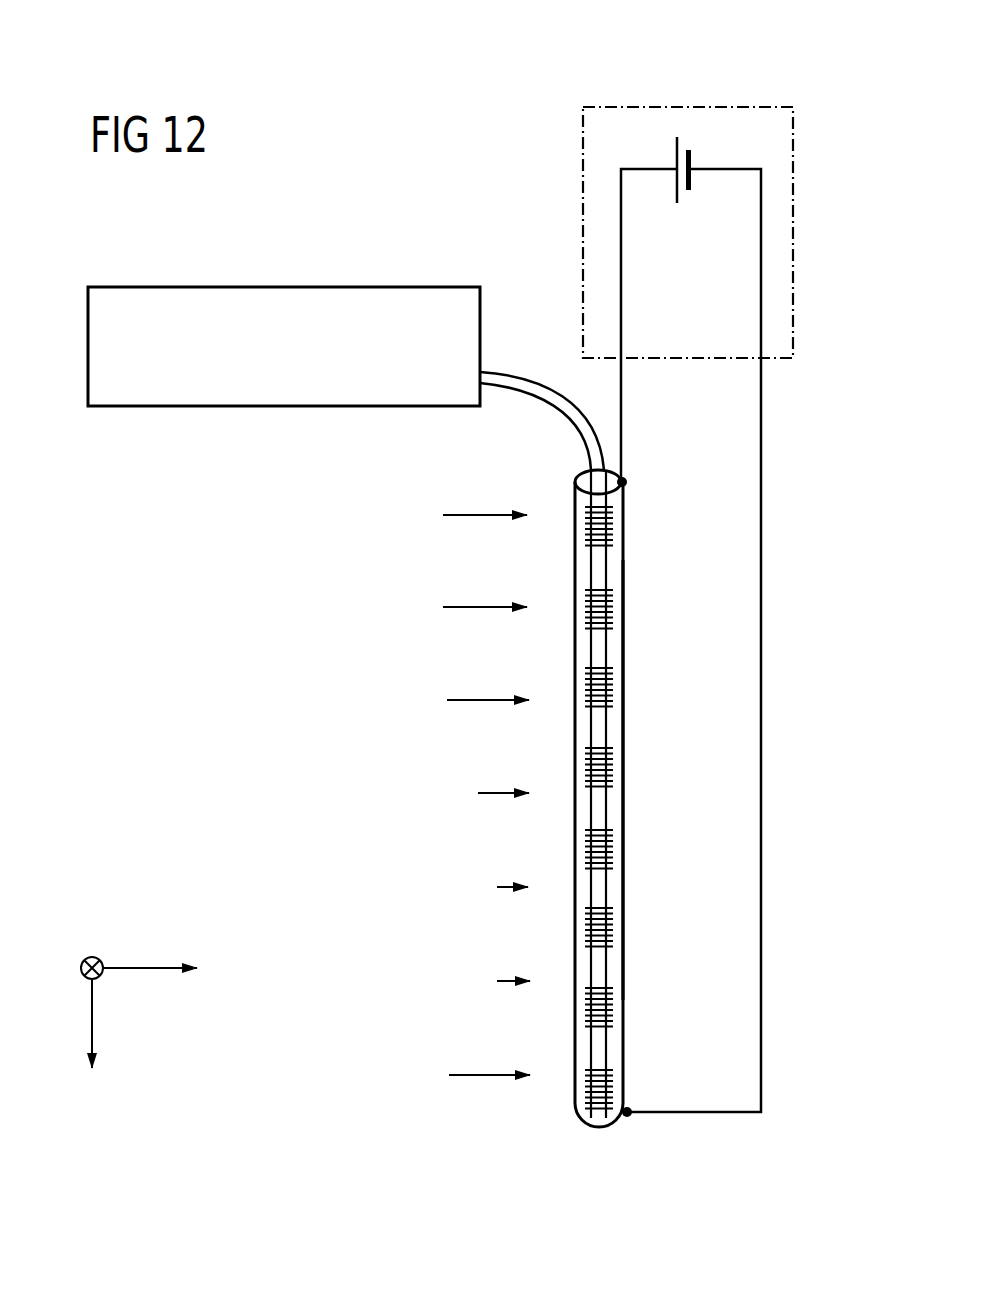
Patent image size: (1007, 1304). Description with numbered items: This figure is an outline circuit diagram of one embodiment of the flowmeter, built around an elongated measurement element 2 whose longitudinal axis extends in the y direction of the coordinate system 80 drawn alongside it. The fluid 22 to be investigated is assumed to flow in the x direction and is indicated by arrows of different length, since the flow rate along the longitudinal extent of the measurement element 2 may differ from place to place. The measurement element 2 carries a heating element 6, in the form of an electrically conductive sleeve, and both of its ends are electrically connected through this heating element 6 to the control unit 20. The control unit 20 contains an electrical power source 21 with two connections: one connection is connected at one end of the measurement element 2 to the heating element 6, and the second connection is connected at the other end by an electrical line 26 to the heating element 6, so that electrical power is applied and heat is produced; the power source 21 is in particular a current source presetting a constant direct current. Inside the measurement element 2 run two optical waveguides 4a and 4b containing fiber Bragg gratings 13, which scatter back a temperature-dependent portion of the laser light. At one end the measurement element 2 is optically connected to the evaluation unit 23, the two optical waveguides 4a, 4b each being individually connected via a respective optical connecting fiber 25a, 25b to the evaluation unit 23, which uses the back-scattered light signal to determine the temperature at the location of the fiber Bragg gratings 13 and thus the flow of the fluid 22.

The measurement element 2 is at (634, 526).
The optical waveguide 4a is at (592, 1047).
The optical waveguide 4b is at (607, 802).
The heating element 6 is at (625, 713).
The fiber Bragg grating 13 is at (615, 925).
The control unit 20 is at (795, 226).
The electrical power source 21 is at (684, 133).
The fluid 22 is at (496, 890).
The evaluation unit 23 is at (287, 406).
The optical connecting fiber 25a is at (577, 420).
The optical connecting fiber 25b is at (571, 392).
The connecting wire 26 is at (760, 405).
The coordinate system 80 is at (125, 1006).